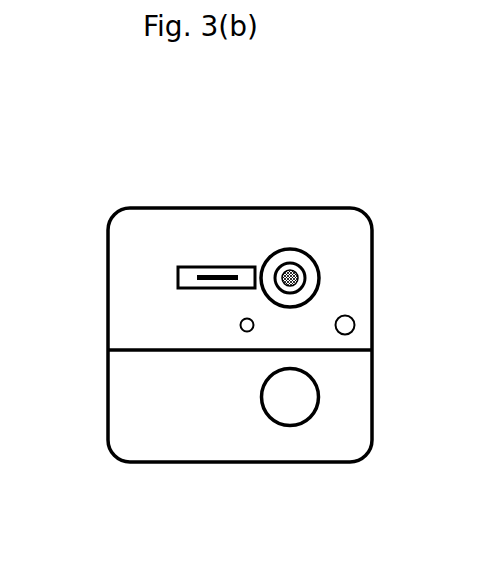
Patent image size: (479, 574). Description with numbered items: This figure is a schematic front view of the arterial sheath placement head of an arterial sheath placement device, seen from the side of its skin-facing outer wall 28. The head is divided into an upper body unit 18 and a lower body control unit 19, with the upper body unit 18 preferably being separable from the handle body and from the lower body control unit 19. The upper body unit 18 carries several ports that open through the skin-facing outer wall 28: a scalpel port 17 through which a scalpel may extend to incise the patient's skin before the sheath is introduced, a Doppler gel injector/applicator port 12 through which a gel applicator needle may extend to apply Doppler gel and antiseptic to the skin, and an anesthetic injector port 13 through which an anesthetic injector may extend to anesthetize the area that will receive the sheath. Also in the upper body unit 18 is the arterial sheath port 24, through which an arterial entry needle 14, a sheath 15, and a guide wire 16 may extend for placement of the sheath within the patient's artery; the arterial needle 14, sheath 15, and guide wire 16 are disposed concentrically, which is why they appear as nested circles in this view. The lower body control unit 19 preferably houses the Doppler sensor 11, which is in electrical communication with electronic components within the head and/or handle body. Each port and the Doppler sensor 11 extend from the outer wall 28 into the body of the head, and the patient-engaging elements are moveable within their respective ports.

The skin-facing outer wall 28 is at (108, 235).
The upper body unit 18 is at (120, 318).
The lower body control unit 19 is at (120, 387).
The scalpel port 17 is at (218, 267).
The guide wire 16 is at (297, 270).
The sheath 15 is at (290, 252).
The arterial entry needle 14 is at (275, 273).
The arterial sheath port 24 is at (322, 277).
The Doppler gel injector/applicator port 12 is at (355, 315).
The anesthetic injector port 13 is at (247, 335).
The Doppler sensor 11 is at (298, 408).